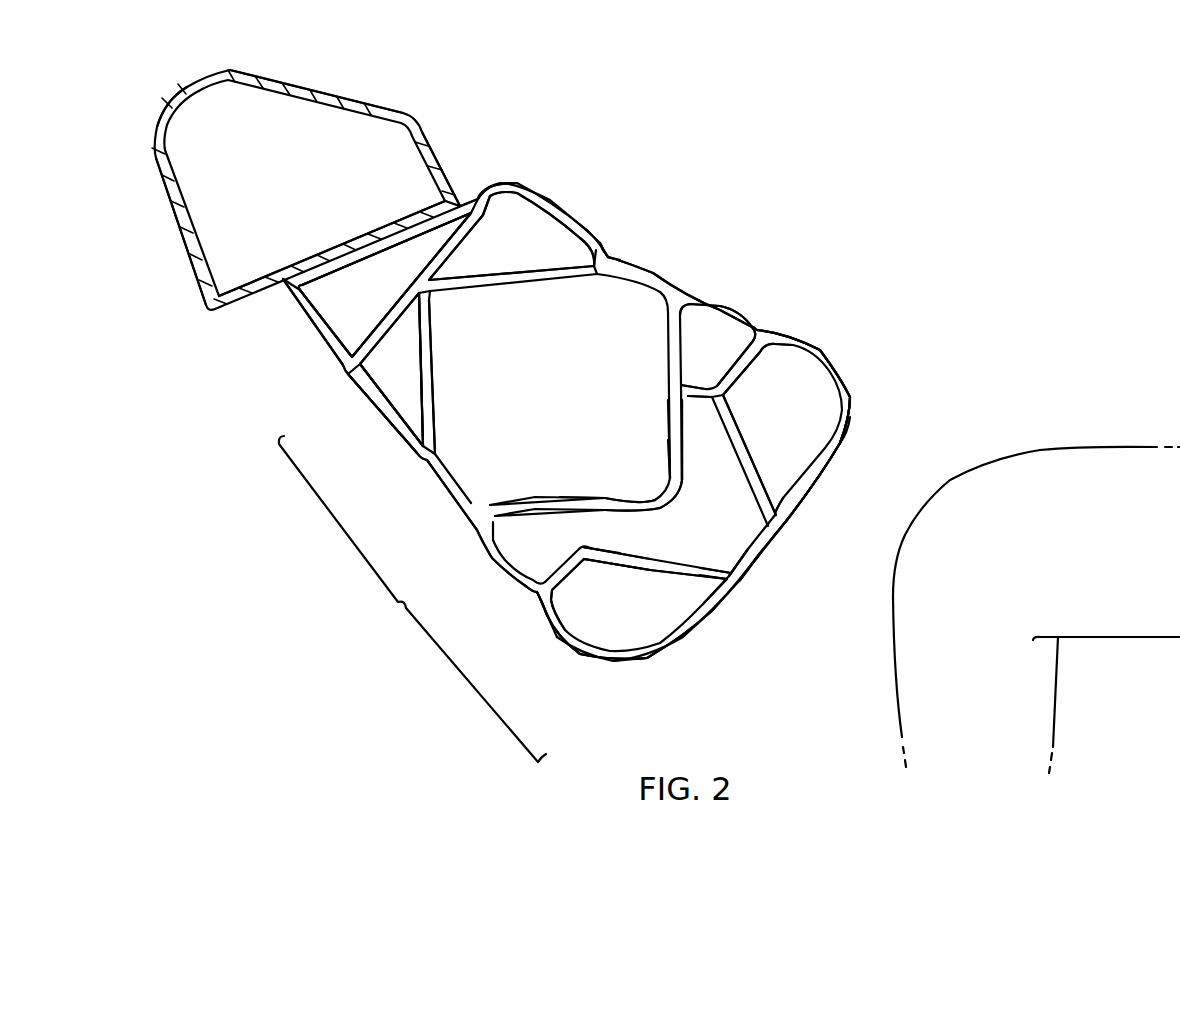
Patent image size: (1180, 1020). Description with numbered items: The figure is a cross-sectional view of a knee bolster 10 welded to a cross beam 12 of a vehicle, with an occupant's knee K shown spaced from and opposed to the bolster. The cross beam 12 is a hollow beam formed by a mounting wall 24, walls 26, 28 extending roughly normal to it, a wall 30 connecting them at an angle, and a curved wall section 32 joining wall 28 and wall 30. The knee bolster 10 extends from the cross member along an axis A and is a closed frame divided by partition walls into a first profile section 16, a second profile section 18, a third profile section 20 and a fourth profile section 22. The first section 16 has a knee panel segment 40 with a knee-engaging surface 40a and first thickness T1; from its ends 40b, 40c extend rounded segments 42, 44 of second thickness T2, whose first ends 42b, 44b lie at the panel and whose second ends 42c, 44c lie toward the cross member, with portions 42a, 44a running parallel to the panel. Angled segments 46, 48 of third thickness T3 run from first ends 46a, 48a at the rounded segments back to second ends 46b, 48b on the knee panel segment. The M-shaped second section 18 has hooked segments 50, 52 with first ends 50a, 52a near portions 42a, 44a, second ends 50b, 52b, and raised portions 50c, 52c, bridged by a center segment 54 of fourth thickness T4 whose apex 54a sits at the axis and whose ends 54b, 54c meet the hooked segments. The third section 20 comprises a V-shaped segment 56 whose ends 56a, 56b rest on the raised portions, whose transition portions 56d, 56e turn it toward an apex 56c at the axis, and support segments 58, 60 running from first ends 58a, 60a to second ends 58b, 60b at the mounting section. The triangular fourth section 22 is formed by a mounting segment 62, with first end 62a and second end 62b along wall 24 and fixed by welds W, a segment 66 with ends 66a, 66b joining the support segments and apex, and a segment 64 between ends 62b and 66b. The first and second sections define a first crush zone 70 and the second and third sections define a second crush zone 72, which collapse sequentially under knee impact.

The knee bolster 10 is at (730, 222).
The cross beam 12 is at (436, 121).
The first profile section 16 is at (832, 355).
The second profile section 18 is at (734, 300).
The third profile section 20 is at (615, 253).
The fourth profile section 22 is at (326, 346).
The mounting wall 24 is at (330, 248).
The wall 26 is at (430, 151).
The wall 28 is at (176, 218).
The wall 30 is at (330, 92).
The curved wall section 32 is at (170, 104).
The knee panel segment 40 is at (786, 530).
The surface 40a is at (830, 470).
The end of knee panel segment 40b is at (653, 657).
The end of knee panel segment 40c is at (845, 443).
The rounded segment 42 is at (597, 659).
The portion of rounded segment 42a is at (593, 623).
The first end of rounded segment 42b is at (633, 661).
The second end of rounded segment 42c is at (577, 548).
The rounded segment 44 is at (847, 385).
The portion of rounded segment 44a is at (745, 358).
The first end of rounded segment 44b is at (846, 430).
The second end of rounded segment 44c is at (714, 387).
The angled segment 46 is at (672, 577).
The first end of angled segment 46a is at (593, 549).
The second end of angled segment 46b is at (709, 582).
The angled segment 48 is at (747, 449).
The first end of angled segment 48a is at (718, 399).
The second end of angled segment 48b is at (776, 510).
The hooked segment 50 is at (525, 495).
The first end of hooked segment 50a is at (520, 593).
The second end of hooked segment 50b is at (628, 457).
The raised portion 50c is at (482, 555).
The hooked segment 52 is at (665, 343).
The first end of hooked segment 52a is at (756, 328).
The second end of hooked segment 52b is at (668, 426).
The raised portion 52c is at (679, 315).
The center segment 54 is at (645, 493).
The apex 54a is at (683, 496).
The end of center segment 54b is at (632, 512).
The end of center segment 54c is at (728, 408).
The V-shaped segment 56 is at (508, 283).
The end of V-shaped segment 56a is at (467, 520).
The end of V-shaped segment 56b is at (682, 291).
The apex 56c is at (428, 296).
The transition portion 56d is at (428, 450).
The transition portion 56e is at (598, 270).
The support segment 58 is at (402, 440).
The first end of support segment 58a is at (413, 457).
The second end of support segment 58b is at (352, 388).
The support segment 60 is at (571, 211).
The first end of support segment 60a is at (606, 248).
The second end of support segment 60b is at (503, 184).
The mounting segment 62 is at (322, 270).
The first end of mounting segment 62a is at (490, 187).
The second end of mounting segment 62b is at (287, 278).
The segment 64 is at (305, 311).
The segment 66 is at (455, 250).
The first end of segment 66a is at (477, 220).
The second end of segment 66b is at (338, 367).
The first crush zone 70 is at (476, 685).
The second crush zone 72 is at (342, 522).
The axis A is at (776, 571).
The knee K is at (973, 487).
The first thickness T1 is at (752, 578).
The second thickness T2 is at (365, 238).
The third thickness T3 is at (457, 280).
The fourth thickness T4 is at (632, 460).
The welds W is at (467, 192).